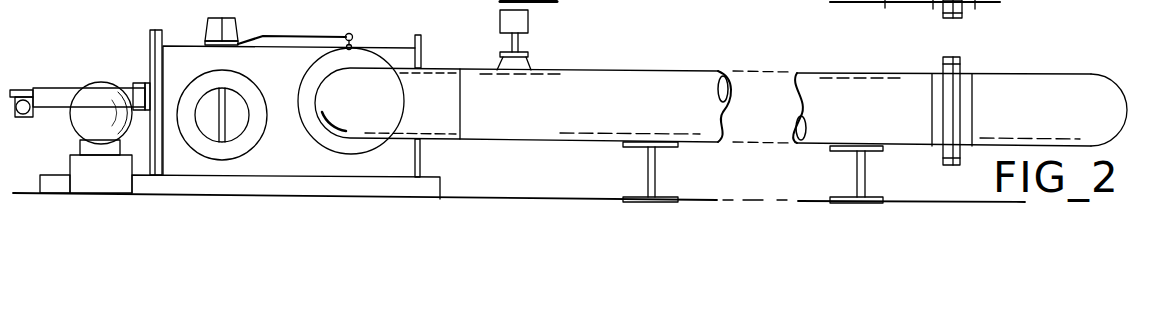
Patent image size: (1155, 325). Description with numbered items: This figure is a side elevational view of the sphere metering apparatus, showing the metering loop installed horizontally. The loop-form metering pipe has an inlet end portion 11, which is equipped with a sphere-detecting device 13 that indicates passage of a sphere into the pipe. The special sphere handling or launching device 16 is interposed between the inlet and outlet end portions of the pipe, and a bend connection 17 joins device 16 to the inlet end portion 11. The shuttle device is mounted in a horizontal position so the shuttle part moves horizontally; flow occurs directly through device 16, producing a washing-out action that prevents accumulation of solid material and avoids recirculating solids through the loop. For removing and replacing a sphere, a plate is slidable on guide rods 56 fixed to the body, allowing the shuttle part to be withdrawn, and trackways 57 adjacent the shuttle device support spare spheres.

The inlet end portion 11 is at (640, 71).
The sphere-detecting device 13 is at (528, 25).
The sphere handling or launching device 16 is at (398, 43).
The bend connection 17 is at (405, 110).
The guide rods 56 is at (57, 88).
The trackways 57 is at (80, 144).